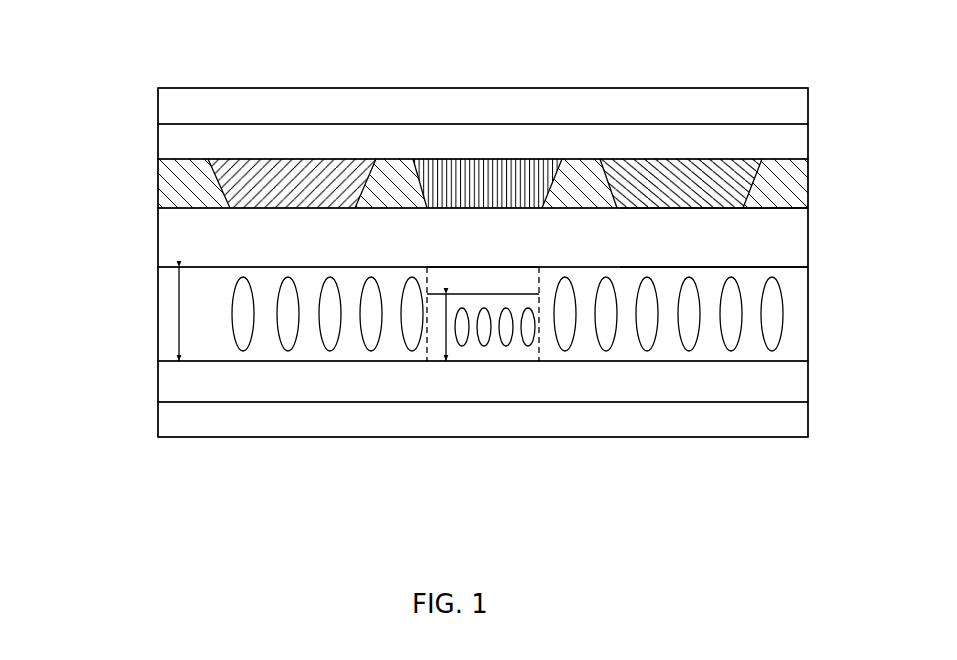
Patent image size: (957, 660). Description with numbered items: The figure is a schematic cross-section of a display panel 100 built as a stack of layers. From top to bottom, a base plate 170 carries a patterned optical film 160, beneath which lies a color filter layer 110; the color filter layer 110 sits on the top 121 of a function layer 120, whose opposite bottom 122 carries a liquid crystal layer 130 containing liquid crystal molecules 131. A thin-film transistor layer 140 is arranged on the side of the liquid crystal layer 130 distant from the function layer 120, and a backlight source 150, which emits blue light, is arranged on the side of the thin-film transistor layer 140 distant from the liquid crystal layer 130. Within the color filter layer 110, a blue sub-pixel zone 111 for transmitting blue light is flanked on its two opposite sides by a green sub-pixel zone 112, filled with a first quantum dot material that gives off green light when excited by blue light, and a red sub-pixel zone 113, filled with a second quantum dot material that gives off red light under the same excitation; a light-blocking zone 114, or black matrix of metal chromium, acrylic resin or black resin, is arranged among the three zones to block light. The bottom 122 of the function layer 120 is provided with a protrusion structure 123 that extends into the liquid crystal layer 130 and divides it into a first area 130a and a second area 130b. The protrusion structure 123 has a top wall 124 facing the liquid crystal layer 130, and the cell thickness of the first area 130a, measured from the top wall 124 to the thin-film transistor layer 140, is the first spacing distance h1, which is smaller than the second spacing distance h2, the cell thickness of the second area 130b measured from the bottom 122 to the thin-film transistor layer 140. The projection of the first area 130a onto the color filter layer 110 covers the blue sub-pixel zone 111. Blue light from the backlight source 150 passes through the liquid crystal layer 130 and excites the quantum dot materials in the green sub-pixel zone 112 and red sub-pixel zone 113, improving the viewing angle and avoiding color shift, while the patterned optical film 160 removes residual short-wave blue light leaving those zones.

The display panel 100 is at (123, 60).
The color filter layer 110 is at (183, 198).
The blue sub-pixel zone 111 is at (455, 165).
The green sub-pixel zone 112 is at (298, 178).
The red sub-pixel zone 113 is at (668, 163).
The light-blocking zone 114 is at (390, 172).
The function layer 120 is at (183, 245).
The top 121 is at (776, 211).
The bottom 122 is at (774, 268).
The protrusion structure 123 is at (521, 287).
The top wall 124 is at (469, 293).
The liquid crystal layer 130 is at (167, 313).
The first area 130a is at (472, 350).
The second area 130b is at (313, 352).
The liquid crystal molecules 131 is at (767, 313).
The thin-film transistor layer 140 is at (183, 390).
The backlight source 150 is at (183, 428).
The patterned optical film 160 is at (183, 115).
The base plate 170 is at (183, 152).
The first spacing distance h1 is at (456, 327).
The second spacing distance h2 is at (196, 314).